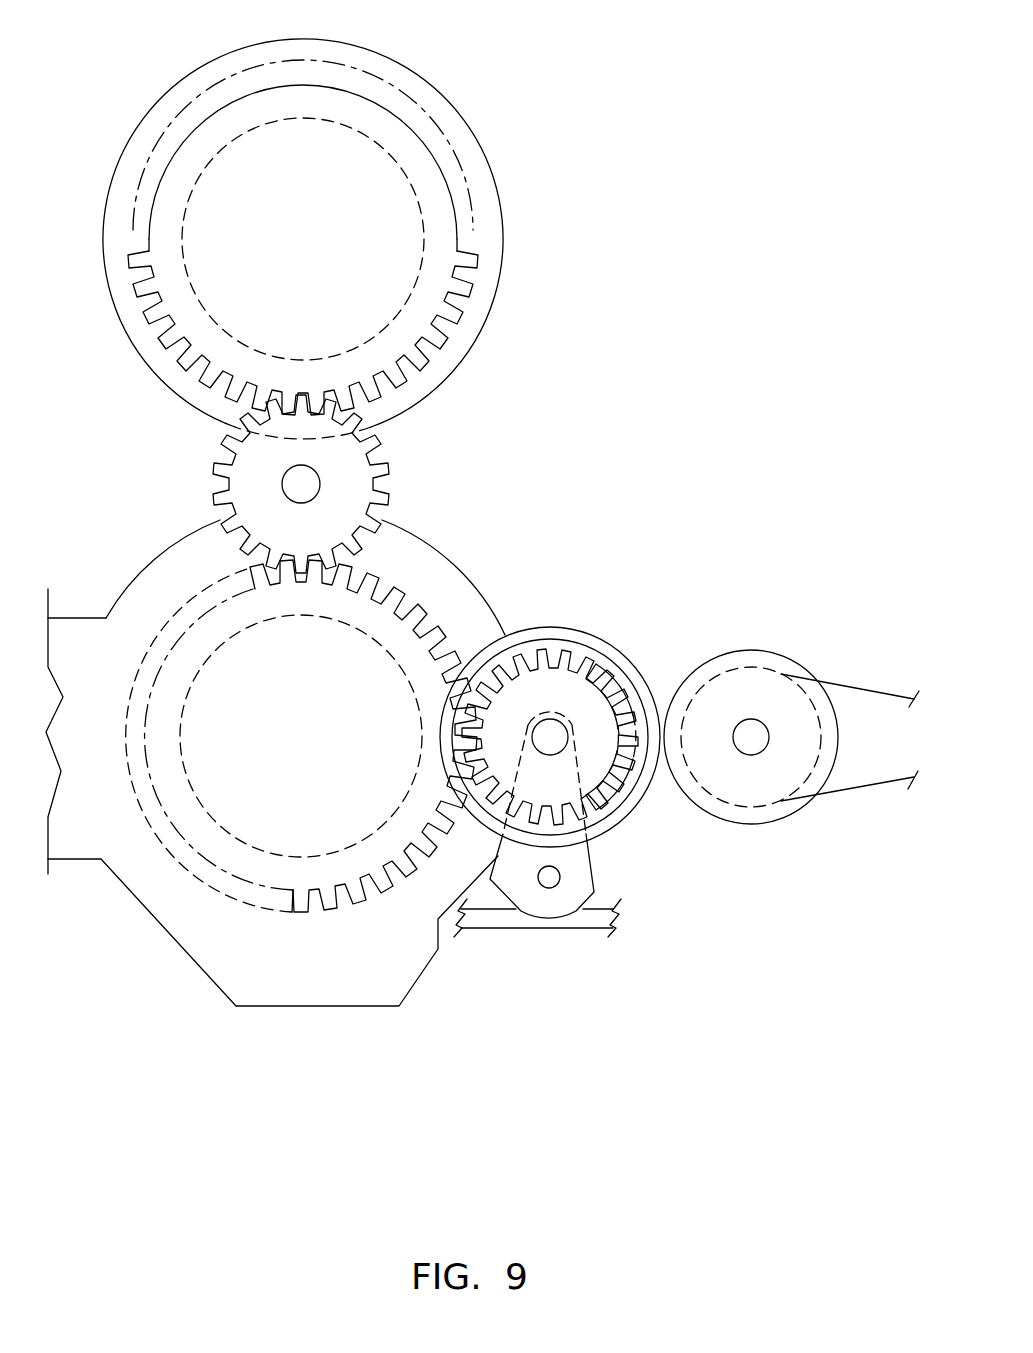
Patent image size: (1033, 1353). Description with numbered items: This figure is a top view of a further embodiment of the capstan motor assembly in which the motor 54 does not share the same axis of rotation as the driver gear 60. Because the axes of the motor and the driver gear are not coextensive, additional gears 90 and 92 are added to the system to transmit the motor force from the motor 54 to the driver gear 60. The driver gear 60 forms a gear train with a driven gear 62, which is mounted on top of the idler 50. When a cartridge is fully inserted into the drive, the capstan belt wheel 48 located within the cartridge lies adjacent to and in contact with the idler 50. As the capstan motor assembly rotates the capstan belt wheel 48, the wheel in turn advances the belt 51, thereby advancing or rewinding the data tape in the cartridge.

The motor 54 is at (490, 253).
The gear 90 is at (432, 313).
The gear 92 is at (383, 461).
The driver gear 60 is at (402, 612).
The driven gear 62 is at (547, 678).
The idler 50 is at (610, 652).
The capstan belt wheel 48 is at (748, 660).
The belt 51 is at (832, 680).